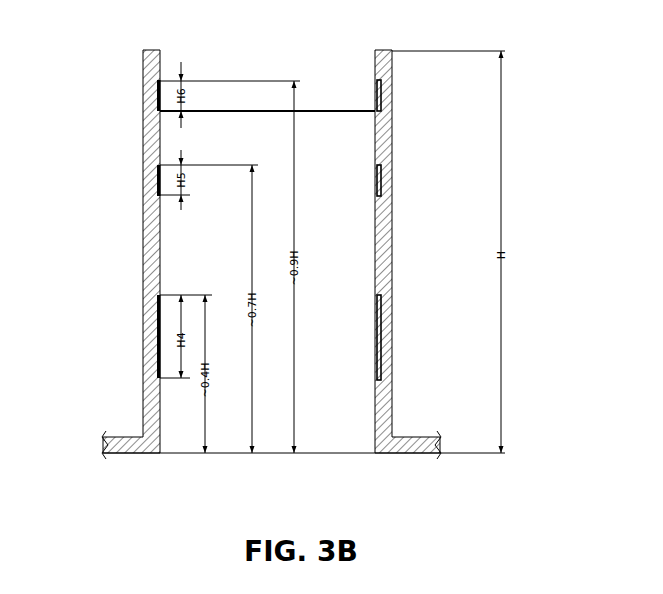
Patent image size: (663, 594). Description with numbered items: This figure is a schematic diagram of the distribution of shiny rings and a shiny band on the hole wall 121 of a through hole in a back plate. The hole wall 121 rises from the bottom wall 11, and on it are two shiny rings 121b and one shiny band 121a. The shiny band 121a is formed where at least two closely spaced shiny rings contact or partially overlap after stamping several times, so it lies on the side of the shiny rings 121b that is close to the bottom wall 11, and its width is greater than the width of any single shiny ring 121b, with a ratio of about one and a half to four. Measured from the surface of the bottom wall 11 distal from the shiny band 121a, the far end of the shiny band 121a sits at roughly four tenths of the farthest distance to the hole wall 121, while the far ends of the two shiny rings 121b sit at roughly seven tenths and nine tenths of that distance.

The hole wall 121 is at (148, 51).
The shiny ring 121b is at (158, 97).
The shiny band 121a is at (159, 327).
The bottom wall 11 is at (395, 448).